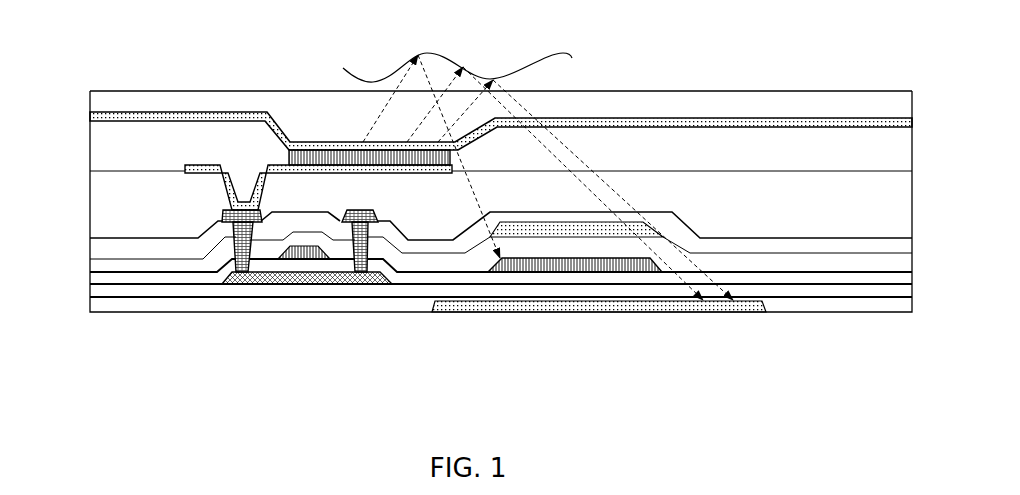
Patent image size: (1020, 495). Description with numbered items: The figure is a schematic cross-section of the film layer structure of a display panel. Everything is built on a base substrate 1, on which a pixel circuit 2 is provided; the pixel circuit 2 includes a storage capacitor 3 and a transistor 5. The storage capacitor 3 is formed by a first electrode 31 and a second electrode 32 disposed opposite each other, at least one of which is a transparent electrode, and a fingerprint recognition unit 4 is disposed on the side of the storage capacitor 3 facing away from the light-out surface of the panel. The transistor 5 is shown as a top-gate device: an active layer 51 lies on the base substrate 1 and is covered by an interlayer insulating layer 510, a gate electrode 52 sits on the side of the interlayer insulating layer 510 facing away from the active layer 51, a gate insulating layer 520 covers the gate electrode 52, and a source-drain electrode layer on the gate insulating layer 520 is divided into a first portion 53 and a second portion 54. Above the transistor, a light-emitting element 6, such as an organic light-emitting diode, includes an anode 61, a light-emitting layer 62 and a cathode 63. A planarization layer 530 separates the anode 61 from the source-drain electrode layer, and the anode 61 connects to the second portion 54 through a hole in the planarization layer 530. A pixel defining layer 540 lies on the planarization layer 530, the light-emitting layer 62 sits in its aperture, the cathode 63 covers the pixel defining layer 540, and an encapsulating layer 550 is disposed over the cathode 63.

The base substrate 1 is at (90, 300).
The pixel circuit 2 is at (442, 313).
The storage capacitor 3 is at (575, 302).
The first electrode 31 is at (566, 266).
The second electrode 32 is at (608, 232).
The fingerprint recognition unit 4 is at (737, 304).
The transistor 5 is at (307, 298).
The active layer 51 is at (280, 280).
The gate electrode 52 is at (305, 254).
The first portion 53 is at (360, 281).
The second portion 54 is at (242, 274).
The light-emitting element 6 is at (501, 118).
The anode 61 is at (198, 165).
The light-emitting layer 62 is at (320, 150).
The cathode 63 is at (318, 57).
The interlayer insulating layer 510 is at (90, 278).
The gate insulating layer 520 is at (90, 260).
The planarization layer 530 is at (90, 203).
The pixel defining layer 540 is at (90, 145).
The encapsulating layer 550 is at (90, 103).